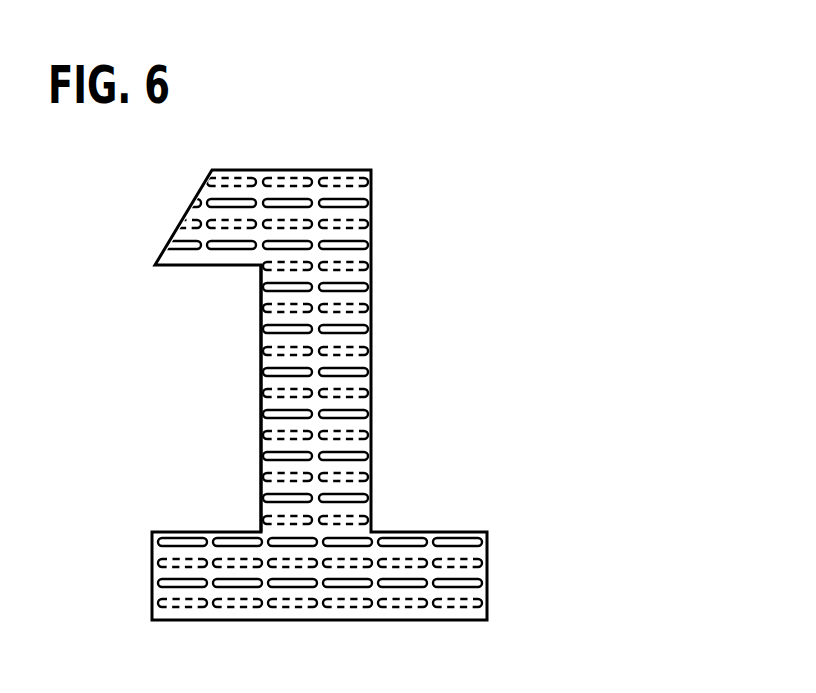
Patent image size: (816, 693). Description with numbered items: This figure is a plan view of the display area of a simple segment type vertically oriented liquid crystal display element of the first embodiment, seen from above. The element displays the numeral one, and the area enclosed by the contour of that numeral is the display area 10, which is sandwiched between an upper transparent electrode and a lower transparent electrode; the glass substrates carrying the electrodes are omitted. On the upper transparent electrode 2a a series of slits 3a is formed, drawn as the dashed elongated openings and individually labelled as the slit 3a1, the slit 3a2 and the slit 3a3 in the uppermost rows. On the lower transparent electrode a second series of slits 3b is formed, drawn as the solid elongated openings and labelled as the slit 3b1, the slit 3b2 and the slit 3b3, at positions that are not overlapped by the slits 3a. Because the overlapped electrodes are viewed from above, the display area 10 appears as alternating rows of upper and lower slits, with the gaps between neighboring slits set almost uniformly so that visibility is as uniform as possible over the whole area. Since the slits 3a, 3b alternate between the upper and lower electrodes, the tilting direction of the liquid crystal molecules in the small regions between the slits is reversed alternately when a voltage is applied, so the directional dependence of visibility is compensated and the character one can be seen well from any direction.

The display area 10 is at (320, 165).
The upper transparent electrode 2a is at (261, 361).
The slits 3a is at (376, 435).
The slits 3b is at (372, 457).
The slit 3a1 is at (374, 181).
The slit 3b1 is at (372, 203).
The slit 3a2 is at (374, 226).
The slit 3b2 is at (372, 246).
The slit 3a3 is at (372, 266).
The slit 3b3 is at (376, 287).